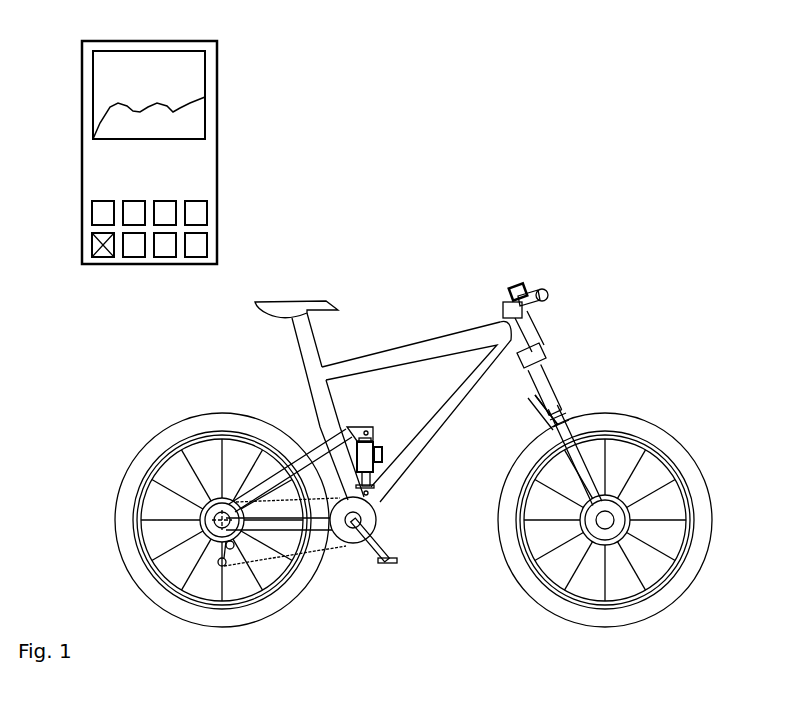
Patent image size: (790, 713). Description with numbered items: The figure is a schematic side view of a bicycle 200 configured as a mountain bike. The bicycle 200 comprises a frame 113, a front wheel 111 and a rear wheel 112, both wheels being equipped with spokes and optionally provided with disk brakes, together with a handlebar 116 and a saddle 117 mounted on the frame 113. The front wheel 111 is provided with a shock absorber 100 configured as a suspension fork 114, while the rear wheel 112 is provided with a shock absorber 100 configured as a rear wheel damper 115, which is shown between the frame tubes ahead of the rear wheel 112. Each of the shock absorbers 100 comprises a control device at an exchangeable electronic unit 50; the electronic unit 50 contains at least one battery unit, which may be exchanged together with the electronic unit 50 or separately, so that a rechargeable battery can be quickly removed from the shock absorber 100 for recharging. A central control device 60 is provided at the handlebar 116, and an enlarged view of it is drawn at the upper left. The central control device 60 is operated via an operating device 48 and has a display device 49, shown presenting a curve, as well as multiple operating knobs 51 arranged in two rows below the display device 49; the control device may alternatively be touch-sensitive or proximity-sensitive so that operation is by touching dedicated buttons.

The operating device 48 is at (222, 72).
The display device 49 is at (132, 63).
The operating knobs 51 is at (197, 246).
The central control device 60 is at (504, 291).
The bicycle 200 is at (596, 283).
The rear wheel 112 is at (117, 482).
The front wheel 111 is at (665, 418).
The frame 113 is at (438, 347).
The saddle 117 is at (315, 297).
The rear wheel damper 115 is at (378, 443).
The electronic unit 50 is at (384, 456).
The suspension fork 114 is at (583, 437).
The handlebar 116 is at (545, 288).
The shock absorber 100 is at (575, 437).